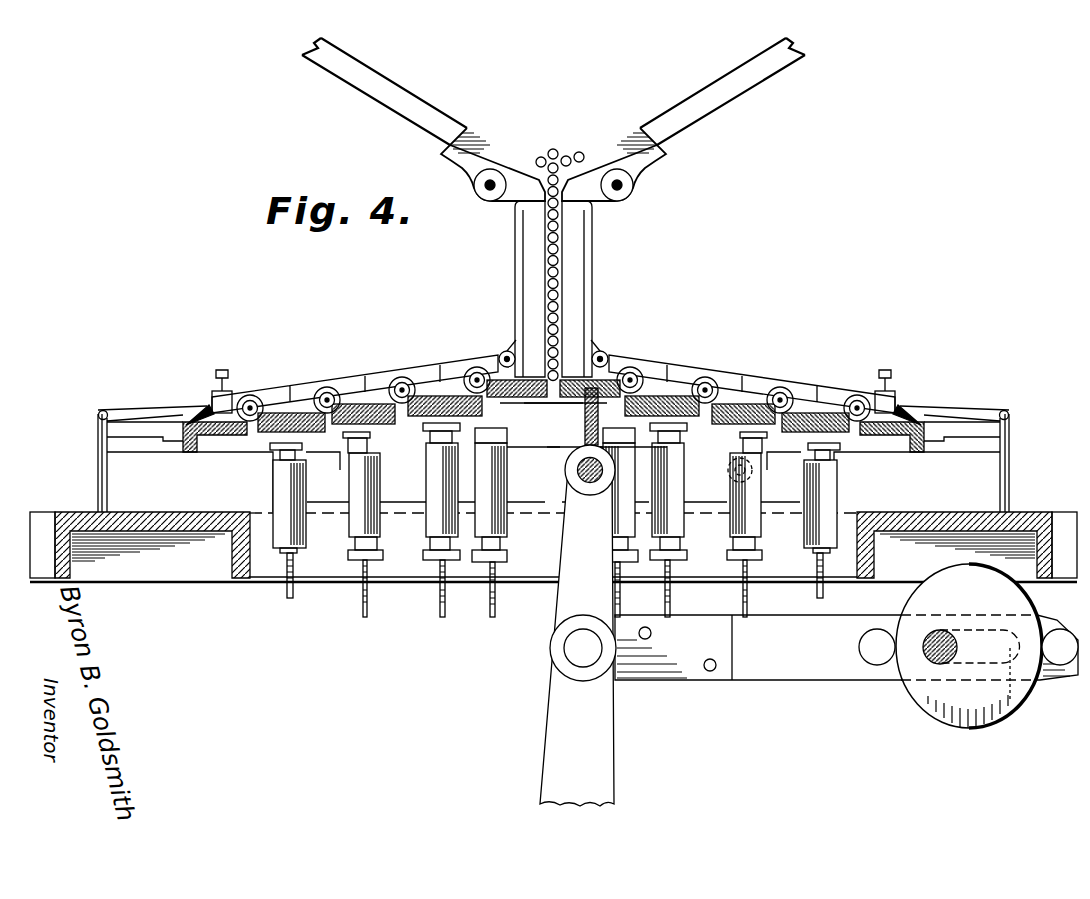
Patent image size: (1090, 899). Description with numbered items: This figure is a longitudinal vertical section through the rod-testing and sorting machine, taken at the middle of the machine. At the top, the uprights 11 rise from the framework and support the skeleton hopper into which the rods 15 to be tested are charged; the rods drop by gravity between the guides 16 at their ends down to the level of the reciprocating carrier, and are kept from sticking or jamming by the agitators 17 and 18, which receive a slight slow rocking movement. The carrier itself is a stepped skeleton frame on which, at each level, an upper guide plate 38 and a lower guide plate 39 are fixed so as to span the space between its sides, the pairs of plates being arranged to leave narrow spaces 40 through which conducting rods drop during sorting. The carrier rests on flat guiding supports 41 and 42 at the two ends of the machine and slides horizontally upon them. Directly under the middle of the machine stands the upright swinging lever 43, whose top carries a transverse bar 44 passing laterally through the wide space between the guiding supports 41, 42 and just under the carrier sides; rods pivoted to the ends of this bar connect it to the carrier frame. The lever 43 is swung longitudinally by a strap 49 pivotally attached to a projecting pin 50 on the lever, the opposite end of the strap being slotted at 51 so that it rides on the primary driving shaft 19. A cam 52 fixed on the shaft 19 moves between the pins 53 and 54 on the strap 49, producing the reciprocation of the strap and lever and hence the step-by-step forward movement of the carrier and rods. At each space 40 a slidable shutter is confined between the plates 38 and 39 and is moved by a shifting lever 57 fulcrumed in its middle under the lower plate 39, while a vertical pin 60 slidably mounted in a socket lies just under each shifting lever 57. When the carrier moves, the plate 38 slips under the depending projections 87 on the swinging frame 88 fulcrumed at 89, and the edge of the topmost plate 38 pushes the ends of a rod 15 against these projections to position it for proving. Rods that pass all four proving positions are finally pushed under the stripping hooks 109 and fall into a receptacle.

The upright 11 is at (397, 97).
The rods 15 is at (560, 152).
The guides 16 is at (517, 263).
The agitator 17 is at (490, 147).
The agitator 18 is at (650, 162).
The primary driving shaft 19 is at (932, 665).
The upper guide plate 38 is at (407, 380).
The lower guide plate 39 is at (387, 427).
The narrow spaces 40 is at (250, 435).
The guiding support 41 is at (345, 457).
The guiding support 42 is at (762, 457).
The swinging lever 43 is at (600, 757).
The transverse bar 44 is at (573, 475).
The strap 49 is at (846, 647).
The projecting pin 50 is at (572, 645).
The slot 51 is at (1015, 632).
The cam 52 is at (967, 725).
The pin 53 is at (870, 657).
The pin 54 is at (1063, 657).
The shifting lever 57 is at (584, 418).
The vertical pin 60 is at (433, 543).
The depending projections 87 is at (297, 397).
The swinging frame 88 is at (267, 380).
The fulcrum 89 is at (507, 350).
The stripping hooks 109 is at (148, 410).